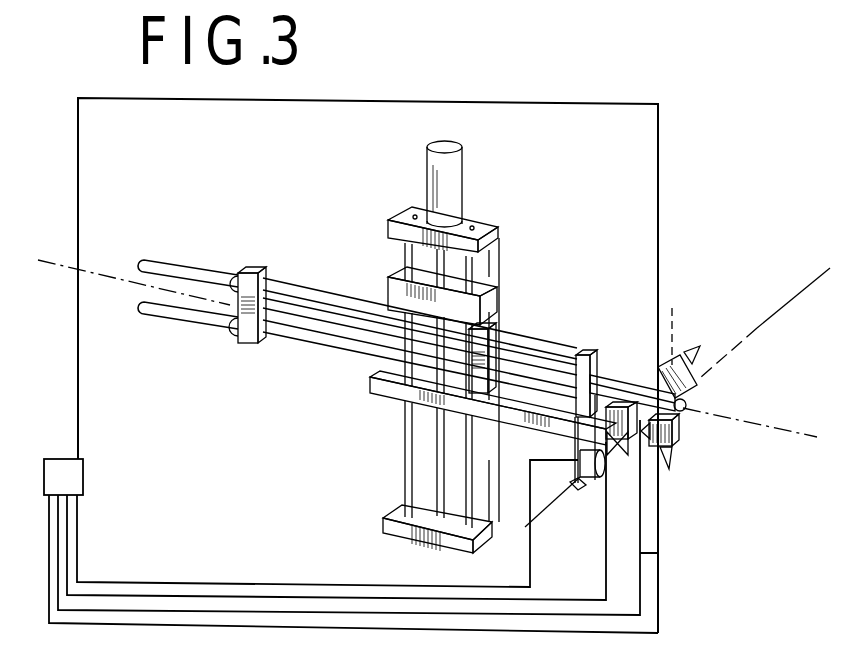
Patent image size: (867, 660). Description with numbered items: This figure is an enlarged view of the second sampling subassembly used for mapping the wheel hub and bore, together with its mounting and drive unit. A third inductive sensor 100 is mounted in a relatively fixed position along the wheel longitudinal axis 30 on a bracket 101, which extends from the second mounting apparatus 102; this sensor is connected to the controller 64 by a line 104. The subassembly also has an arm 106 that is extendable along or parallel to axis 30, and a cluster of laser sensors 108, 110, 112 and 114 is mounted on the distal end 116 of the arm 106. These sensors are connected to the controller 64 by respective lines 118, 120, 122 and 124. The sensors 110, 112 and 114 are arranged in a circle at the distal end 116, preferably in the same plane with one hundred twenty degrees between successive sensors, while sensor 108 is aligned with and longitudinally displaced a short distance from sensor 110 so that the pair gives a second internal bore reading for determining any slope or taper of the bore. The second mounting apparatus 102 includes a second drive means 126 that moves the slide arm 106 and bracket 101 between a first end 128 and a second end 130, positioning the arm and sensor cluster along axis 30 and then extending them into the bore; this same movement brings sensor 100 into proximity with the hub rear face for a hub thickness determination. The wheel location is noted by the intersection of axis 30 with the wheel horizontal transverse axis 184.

The axis 30 is at (748, 418).
The controller 64 is at (84, 478).
The third inductive sensor 100 is at (572, 460).
The bracket 101 is at (370, 385).
The second mounting apparatus 102 is at (400, 470).
The line 104 is at (80, 535).
The arm 106 is at (618, 368).
The laser sensor 108 is at (602, 480).
The laser sensor 110 is at (675, 448).
The laser sensor 112 is at (700, 358).
The laser sensor 114 is at (622, 368).
The distal end 116 is at (700, 404).
The line 118 is at (605, 573).
The line 120 is at (658, 606).
The line 122 is at (658, 170).
The line 124 is at (658, 553).
The second drive means 126 is at (462, 160).
The first end 128 is at (388, 220).
The second end 130 is at (383, 532).
The wheel horizontal transverse axis 184 is at (803, 292).